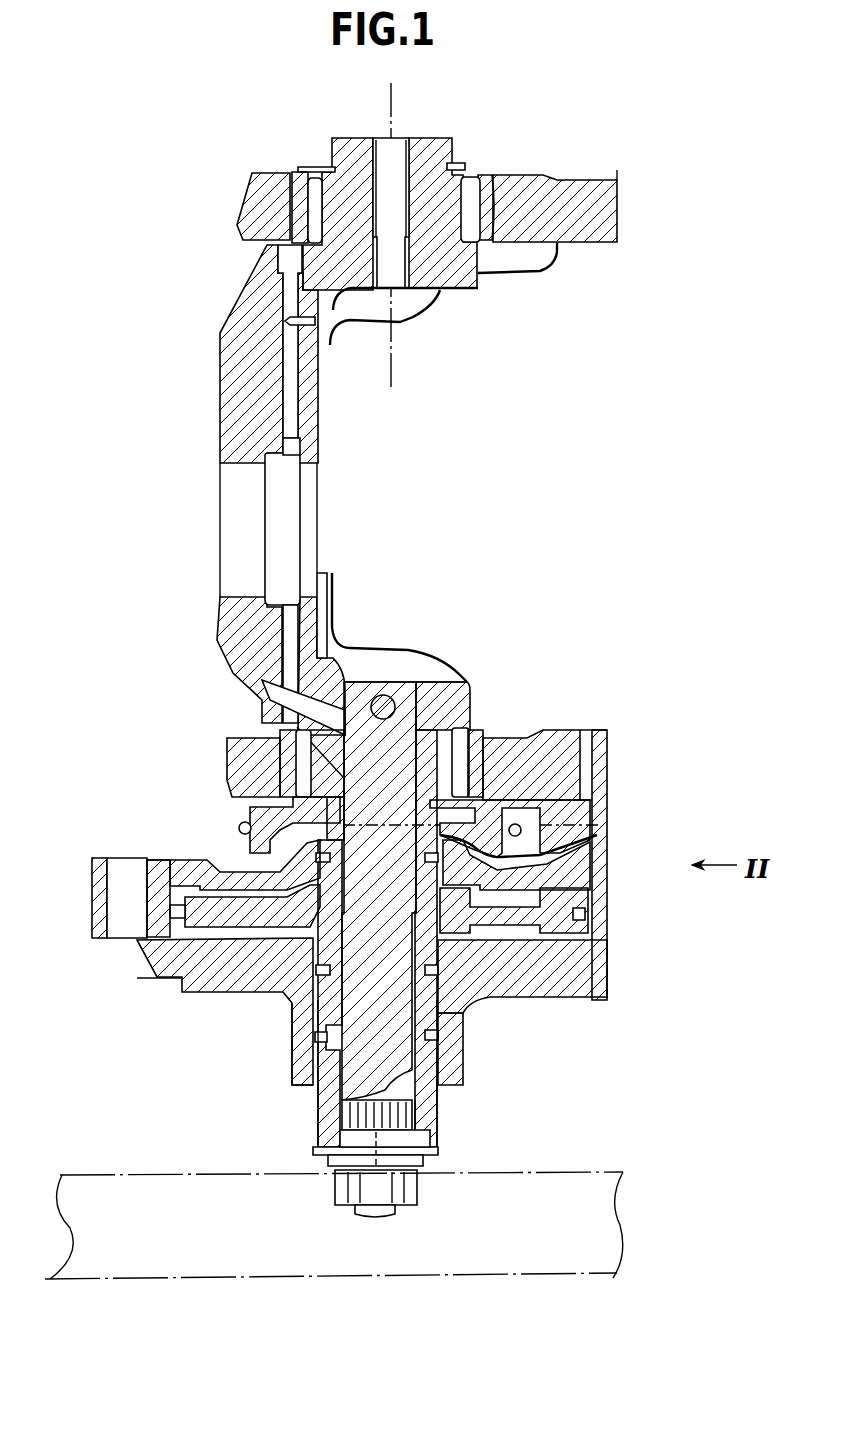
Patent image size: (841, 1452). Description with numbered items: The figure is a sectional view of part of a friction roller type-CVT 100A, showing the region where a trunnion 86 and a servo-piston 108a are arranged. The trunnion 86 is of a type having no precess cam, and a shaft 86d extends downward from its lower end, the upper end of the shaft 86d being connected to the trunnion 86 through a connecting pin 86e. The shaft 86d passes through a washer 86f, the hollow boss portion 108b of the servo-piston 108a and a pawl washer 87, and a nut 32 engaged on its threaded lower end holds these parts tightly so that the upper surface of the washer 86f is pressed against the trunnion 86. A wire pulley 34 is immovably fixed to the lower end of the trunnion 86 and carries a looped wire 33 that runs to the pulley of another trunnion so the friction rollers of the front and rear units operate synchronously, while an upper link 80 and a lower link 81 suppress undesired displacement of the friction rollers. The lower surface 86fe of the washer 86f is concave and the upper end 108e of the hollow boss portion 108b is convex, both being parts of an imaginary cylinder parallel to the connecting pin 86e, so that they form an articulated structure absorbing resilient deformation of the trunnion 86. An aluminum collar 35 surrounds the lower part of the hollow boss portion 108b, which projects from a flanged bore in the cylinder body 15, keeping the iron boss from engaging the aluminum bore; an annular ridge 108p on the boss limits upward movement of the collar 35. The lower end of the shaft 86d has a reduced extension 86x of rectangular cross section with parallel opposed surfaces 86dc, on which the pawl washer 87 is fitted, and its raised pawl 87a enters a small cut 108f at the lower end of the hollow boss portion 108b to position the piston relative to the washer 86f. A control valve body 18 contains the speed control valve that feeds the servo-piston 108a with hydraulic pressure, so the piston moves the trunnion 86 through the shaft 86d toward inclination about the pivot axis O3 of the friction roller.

The friction roller type-CVT 100A is at (662, 86).
The pivot axis O3 is at (402, 97).
The upper link 80 is at (255, 197).
The trunnion 86 is at (245, 333).
The connecting pin 86e is at (383, 698).
The lower link 81 is at (230, 752).
The wire pulley 34 is at (255, 813).
The looped wire 33 is at (237, 829).
The washer 86f is at (508, 850).
The upper end of hollow boss portion 108e is at (445, 750).
The hollow boss portion 108b is at (423, 870).
The servo-piston 108a is at (548, 900).
The cylinder body 15 is at (152, 955).
The lower surface of washer 86fe is at (342, 862).
The collar 35 is at (313, 1095).
The shaft 86d is at (375, 908).
The annular ridge 108p is at (420, 1050).
The small cut 108f is at (417, 1112).
The reduced extension 86x is at (395, 1183).
The pawl washer 87 is at (313, 1150).
The pawl 87a is at (430, 1143).
The nut 32 is at (335, 1185).
The parallel opposed surfaces 86dc is at (393, 1140).
The control valve body 18 is at (587, 1167).